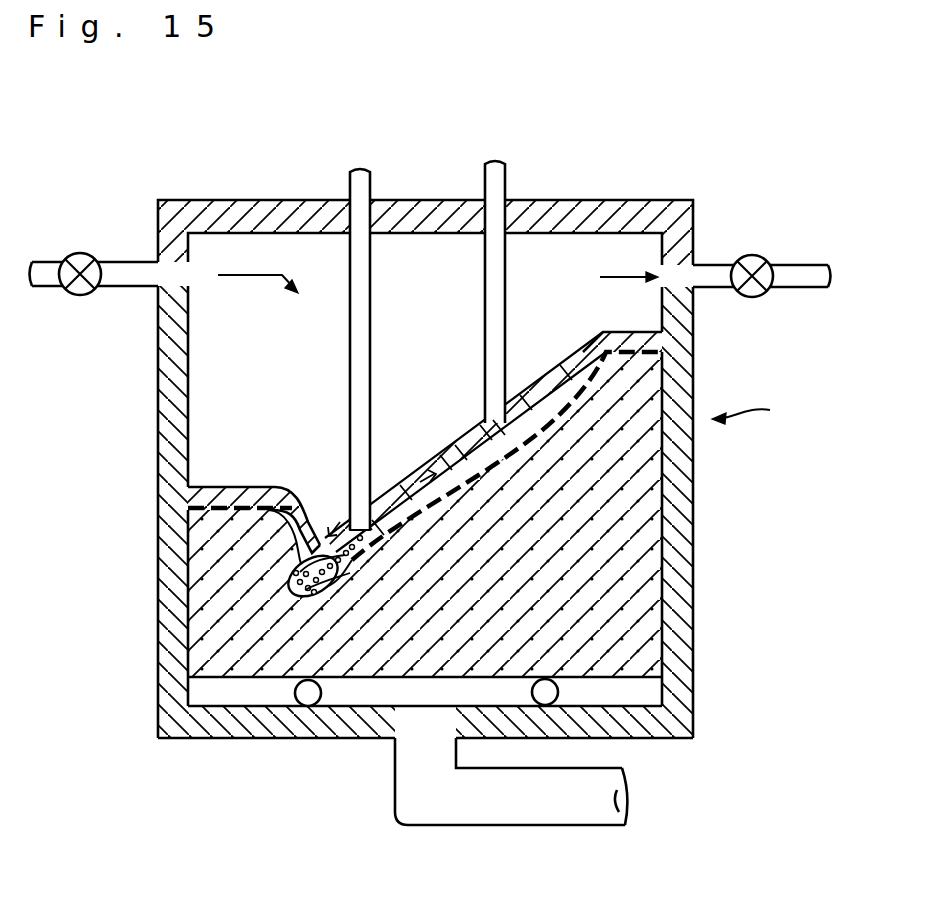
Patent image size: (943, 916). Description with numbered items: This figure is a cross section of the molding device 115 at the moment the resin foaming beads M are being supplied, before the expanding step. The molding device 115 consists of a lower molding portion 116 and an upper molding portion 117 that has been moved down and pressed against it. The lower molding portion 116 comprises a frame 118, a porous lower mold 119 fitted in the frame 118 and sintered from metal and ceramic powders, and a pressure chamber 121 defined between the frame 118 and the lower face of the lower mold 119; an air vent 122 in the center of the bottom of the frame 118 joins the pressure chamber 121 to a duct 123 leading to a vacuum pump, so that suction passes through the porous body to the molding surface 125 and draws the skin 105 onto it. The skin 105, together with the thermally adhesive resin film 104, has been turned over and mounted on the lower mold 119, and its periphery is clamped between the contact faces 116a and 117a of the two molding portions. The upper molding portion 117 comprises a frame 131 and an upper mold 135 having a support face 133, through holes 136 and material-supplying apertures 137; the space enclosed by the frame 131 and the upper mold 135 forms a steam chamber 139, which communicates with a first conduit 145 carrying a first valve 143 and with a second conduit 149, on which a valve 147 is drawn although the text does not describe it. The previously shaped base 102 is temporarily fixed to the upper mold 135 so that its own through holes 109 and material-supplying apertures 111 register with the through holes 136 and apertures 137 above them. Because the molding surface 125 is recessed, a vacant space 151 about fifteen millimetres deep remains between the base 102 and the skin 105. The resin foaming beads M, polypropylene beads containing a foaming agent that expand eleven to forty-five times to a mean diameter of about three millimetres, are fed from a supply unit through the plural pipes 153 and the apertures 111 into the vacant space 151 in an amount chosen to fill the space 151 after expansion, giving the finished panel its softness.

The base 102 is at (410, 470).
The thermally adhesive resin film 104 is at (300, 572).
The skin 105 is at (305, 590).
The through holes 109 is at (248, 470).
The material-supplying apertures 111 is at (350, 508).
The molding device 115 is at (828, 423).
The lower molding portion 116 is at (678, 551).
The contact face 116a is at (160, 503).
The upper molding portion 117 is at (693, 221).
The contact face 117a is at (158, 512).
The frame 118 is at (678, 636).
The lower mold 119 is at (648, 500).
The pressure chamber 121 is at (648, 692).
The air vent 122 is at (400, 746).
The duct 123 is at (497, 825).
The molding surface 125 is at (326, 588).
The frame 131 is at (158, 425).
The support face 133 is at (350, 500).
The upper mold 135 is at (455, 445).
The through holes 136 is at (372, 395).
The material-supplying apertures 137 is at (515, 395).
The steam chamber 139 is at (267, 257).
The first valve 143 is at (78, 295).
The first conduit 145 is at (122, 267).
The outlet valve 147 is at (757, 297).
The second conduit 149 is at (803, 267).
The vacant space 151 is at (568, 348).
The pipes 153 is at (506, 258).
The resin foaming beads M is at (300, 592).